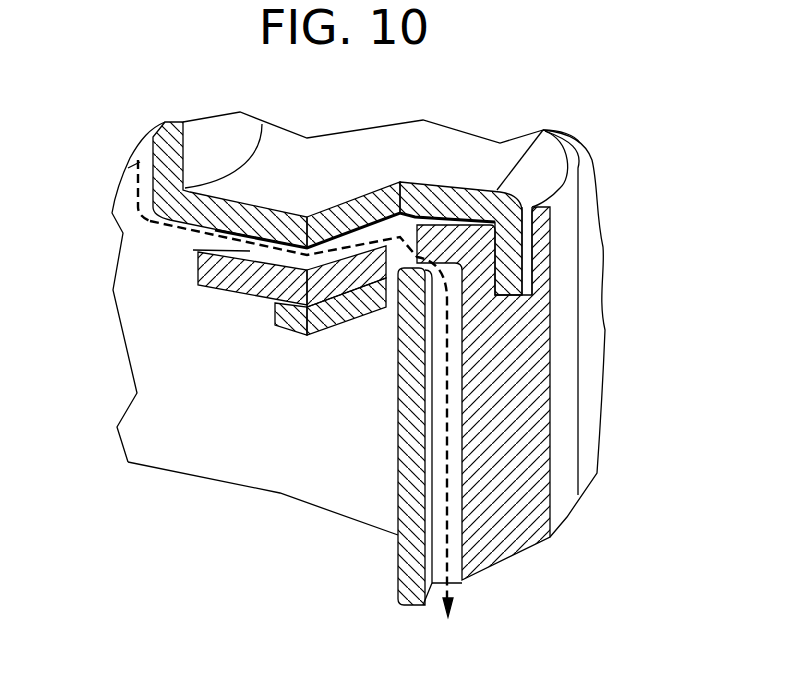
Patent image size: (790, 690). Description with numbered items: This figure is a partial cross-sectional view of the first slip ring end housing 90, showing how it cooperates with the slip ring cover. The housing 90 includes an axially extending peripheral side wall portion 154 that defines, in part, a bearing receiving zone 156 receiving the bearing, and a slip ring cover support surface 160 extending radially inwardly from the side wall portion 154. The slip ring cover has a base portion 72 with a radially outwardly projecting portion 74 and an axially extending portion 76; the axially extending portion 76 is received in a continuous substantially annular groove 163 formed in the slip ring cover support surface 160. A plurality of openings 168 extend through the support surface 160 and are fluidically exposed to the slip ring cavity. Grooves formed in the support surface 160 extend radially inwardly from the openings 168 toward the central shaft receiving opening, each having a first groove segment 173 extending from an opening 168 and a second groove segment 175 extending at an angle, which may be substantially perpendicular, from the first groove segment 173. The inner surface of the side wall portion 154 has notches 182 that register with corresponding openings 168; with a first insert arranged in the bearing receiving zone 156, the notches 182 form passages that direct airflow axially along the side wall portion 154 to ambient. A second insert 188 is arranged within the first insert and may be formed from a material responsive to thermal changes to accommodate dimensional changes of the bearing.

The base portion 72 is at (417, 126).
The radially outwardly projecting portion 74 is at (542, 132).
The axially extending portion 76 is at (545, 205).
The first slip ring end housing 90 is at (625, 585).
The axially extending peripheral side wall portion 154 is at (573, 420).
The bearing receiving zone 156 is at (153, 493).
The slip ring cover support surface 160 is at (443, 225).
The continuous substantially annular groove 163 is at (507, 250).
The openings 168 is at (413, 243).
The first groove segment 173 is at (398, 300).
The second groove segment 175 is at (197, 252).
The notches 182 is at (457, 478).
The second insert 188 is at (153, 375).